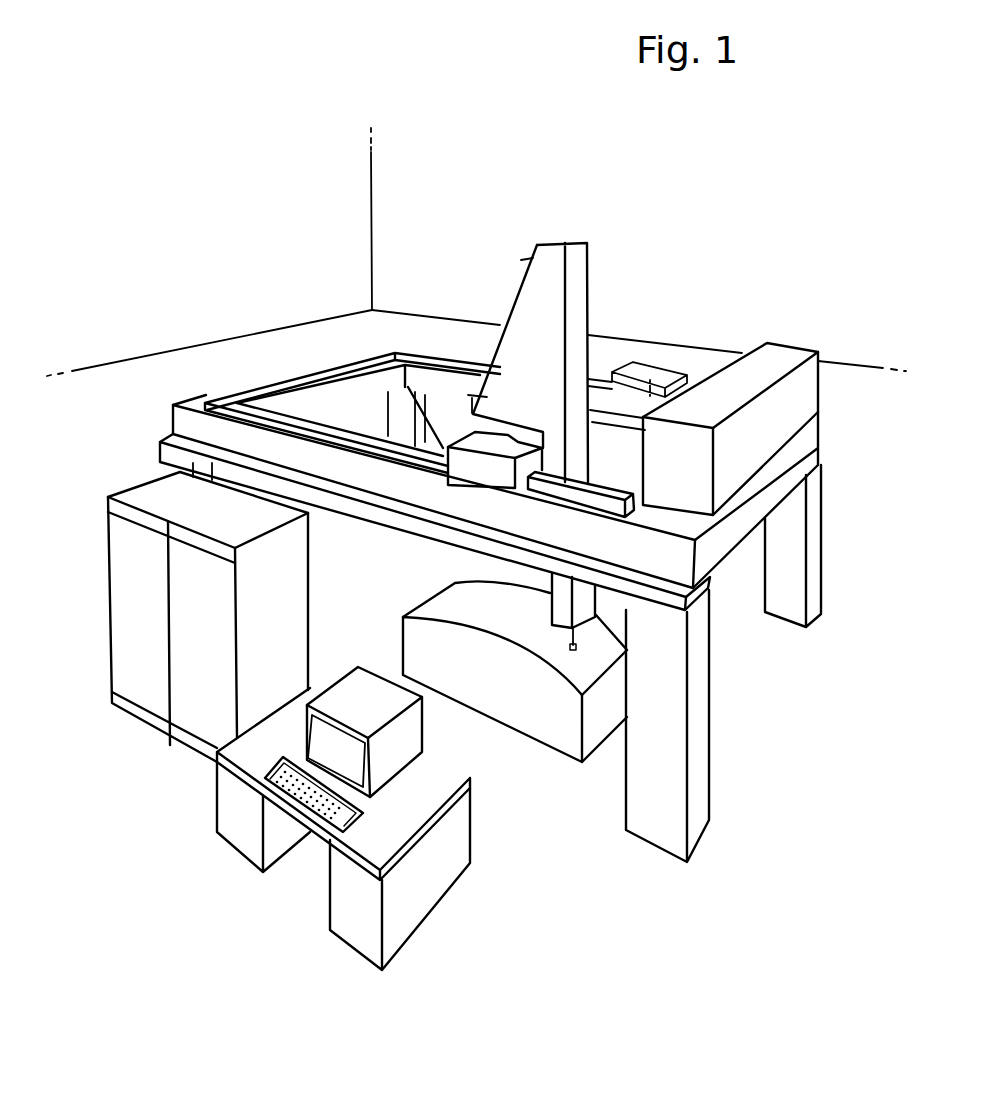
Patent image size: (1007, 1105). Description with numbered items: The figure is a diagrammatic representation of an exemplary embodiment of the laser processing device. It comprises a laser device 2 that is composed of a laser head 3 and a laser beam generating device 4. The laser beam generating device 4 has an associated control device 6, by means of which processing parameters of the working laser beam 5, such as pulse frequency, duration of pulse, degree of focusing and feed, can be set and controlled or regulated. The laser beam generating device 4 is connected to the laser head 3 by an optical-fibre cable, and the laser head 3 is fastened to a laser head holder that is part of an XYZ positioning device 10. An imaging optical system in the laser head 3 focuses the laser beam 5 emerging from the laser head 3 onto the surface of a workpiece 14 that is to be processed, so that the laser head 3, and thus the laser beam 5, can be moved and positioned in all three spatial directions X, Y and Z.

The laser device 2 is at (112, 443).
The laser head 3 is at (560, 614).
The laser beam generating device 4 is at (127, 647).
The laser beam 5 is at (573, 648).
The control device 6 is at (433, 895).
The XYZ positioning device 10 is at (581, 311).
The workpiece 14 is at (542, 725).